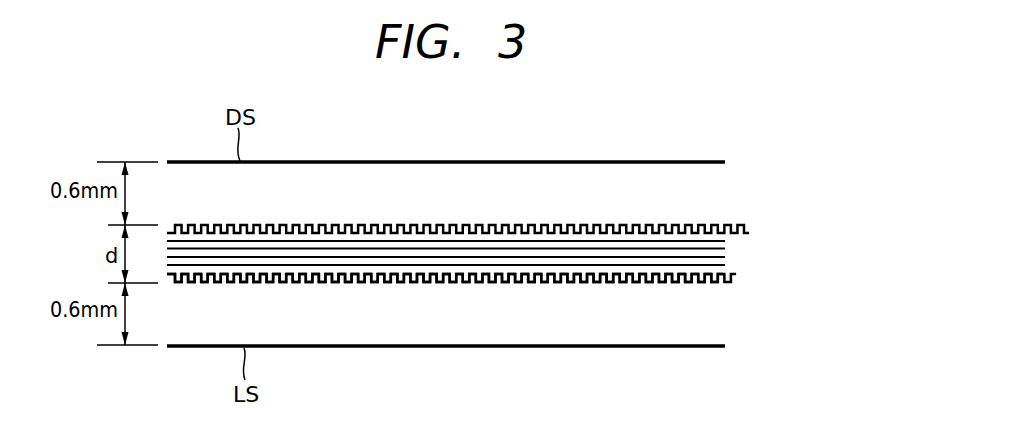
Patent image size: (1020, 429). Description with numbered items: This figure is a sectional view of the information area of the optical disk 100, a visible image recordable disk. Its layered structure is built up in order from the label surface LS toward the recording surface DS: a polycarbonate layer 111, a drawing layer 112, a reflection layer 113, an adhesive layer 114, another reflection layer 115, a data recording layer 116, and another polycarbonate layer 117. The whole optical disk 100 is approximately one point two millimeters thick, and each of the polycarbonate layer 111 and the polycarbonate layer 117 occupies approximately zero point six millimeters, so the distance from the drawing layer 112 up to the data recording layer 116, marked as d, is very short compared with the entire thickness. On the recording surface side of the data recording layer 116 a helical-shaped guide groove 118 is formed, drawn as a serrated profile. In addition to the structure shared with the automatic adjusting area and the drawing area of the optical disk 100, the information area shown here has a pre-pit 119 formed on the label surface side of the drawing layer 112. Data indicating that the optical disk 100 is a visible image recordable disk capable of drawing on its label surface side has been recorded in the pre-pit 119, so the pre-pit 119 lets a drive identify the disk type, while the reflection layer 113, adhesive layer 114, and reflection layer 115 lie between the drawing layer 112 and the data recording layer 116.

The optical disk 100 is at (479, 153).
The polycarbonate layer 111 is at (703, 318).
The drawing layer 112 is at (723, 277).
The reflection layer 113 is at (725, 264).
The adhesive layer 114 is at (725, 254).
The reflection layer 115 is at (725, 247).
The data recording layer 116 is at (722, 237).
The polycarbonate layer 117 is at (718, 188).
The groove 118 is at (713, 227).
The pre-pit 119 is at (716, 281).